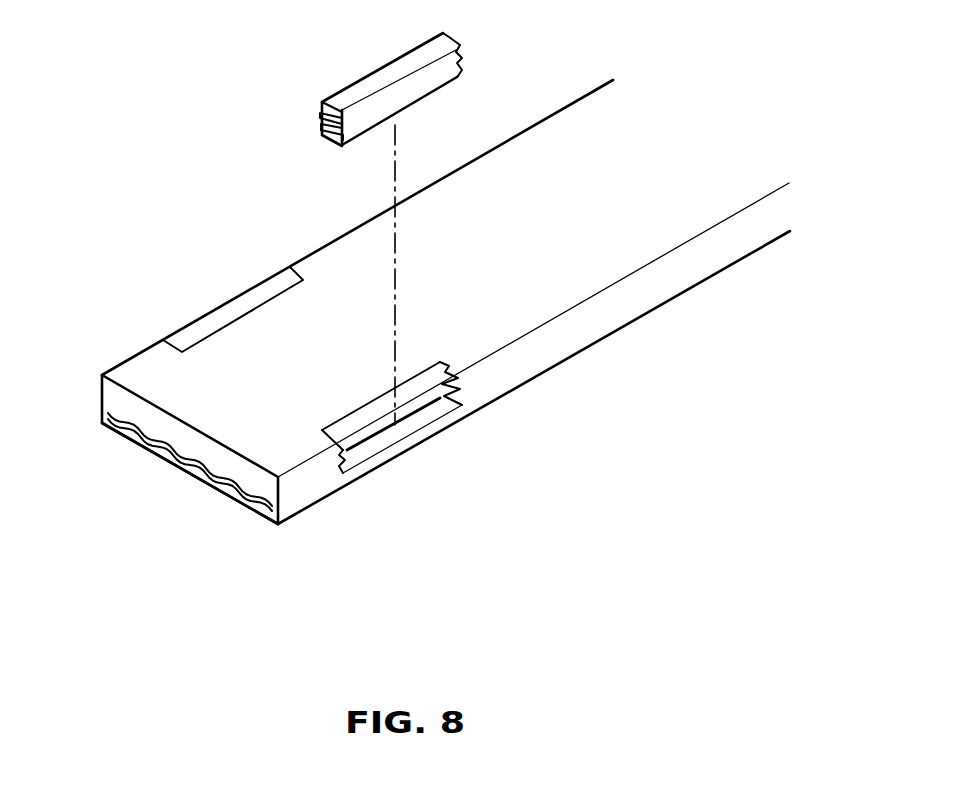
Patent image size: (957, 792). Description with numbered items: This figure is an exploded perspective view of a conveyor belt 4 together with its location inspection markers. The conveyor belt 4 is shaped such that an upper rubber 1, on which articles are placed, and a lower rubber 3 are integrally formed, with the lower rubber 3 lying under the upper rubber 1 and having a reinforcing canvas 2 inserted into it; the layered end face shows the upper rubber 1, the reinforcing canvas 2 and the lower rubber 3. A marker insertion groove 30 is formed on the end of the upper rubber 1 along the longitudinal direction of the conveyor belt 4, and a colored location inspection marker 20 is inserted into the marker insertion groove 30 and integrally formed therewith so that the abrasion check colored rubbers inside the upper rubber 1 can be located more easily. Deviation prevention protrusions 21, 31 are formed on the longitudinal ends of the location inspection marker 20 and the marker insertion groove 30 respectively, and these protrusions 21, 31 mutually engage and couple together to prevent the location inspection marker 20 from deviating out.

The upper rubber 1 is at (147, 370).
The reinforcing canvas 2 is at (148, 447).
The lower rubber 3 is at (243, 497).
The conveyor belt 4 is at (110, 262).
The location inspection marker 20 is at (378, 82).
The deviation prevention protrusion 21 is at (325, 112).
The marker insertion groove 30 is at (413, 420).
The deviation prevention protrusion 31 is at (343, 457).